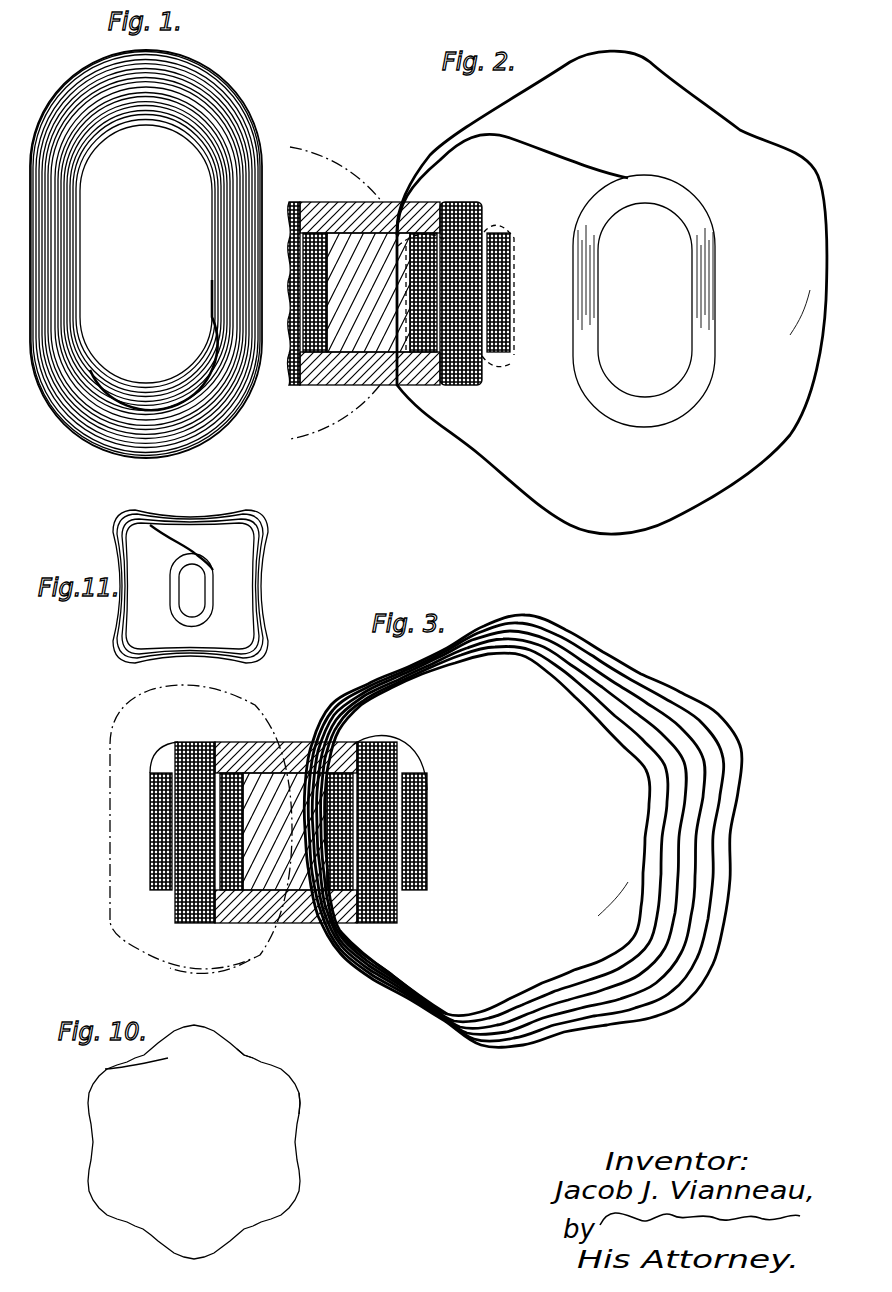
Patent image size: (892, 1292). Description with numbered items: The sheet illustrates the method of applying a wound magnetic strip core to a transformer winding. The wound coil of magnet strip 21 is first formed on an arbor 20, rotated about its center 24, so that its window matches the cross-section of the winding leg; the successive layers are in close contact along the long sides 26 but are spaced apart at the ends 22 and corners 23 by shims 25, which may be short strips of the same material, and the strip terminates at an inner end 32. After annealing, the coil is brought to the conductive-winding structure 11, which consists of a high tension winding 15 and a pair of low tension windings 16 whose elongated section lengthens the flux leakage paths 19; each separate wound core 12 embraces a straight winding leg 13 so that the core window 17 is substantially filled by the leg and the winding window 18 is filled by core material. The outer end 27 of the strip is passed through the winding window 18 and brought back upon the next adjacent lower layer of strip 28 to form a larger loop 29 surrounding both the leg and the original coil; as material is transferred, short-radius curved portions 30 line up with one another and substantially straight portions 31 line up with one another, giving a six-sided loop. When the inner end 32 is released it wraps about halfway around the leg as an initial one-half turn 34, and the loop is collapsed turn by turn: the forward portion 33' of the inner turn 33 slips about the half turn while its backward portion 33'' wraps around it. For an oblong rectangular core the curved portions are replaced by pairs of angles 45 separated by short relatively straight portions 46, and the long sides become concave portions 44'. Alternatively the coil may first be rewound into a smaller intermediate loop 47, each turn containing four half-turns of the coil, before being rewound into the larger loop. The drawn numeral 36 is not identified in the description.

In FIG. 2, the conductive-winding structure 11 is at (385, 385).
In FIG. 3, the conductive-winding structure 11 is at (296, 925).
In FIG. 2, the wound core 12 is at (330, 424).
In FIG. 3, the wound core 12 is at (254, 950).
In FIG. 2, the winding leg 13 is at (490, 362).
In FIG. 3, the winding leg 13 is at (175, 896).
In FIG. 2, the high tension winding 15 is at (478, 204).
In FIG. 3, the high tension winding 15 is at (392, 925).
In FIG. 2, the low tension windings 16 is at (420, 248).
In FIG. 3, the low tension windings 16 is at (346, 920).
In FIG. 2, the core window 17 is at (674, 224).
In FIG. 3, the core window 17 is at (165, 756).
In FIG. 11, the core window 17 is at (180, 590).
In FIG. 2, the winding window 18 is at (376, 232).
In FIG. 3, the winding window 18 is at (288, 744).
In FIG. 2, the flux leakage paths 19 is at (513, 251).
In FIG. 1, the arbor 20 is at (112, 142).
In FIG. 1, the coil of magnet strip 21 is at (31, 347).
In FIG. 2, the coil of magnet strip 21 is at (716, 349).
In FIG. 11, the coil of magnet strip 21 is at (213, 605).
In FIG. 1, the ends 22 is at (166, 55).
In FIG. 1, the corners 23 is at (42, 108).
In FIG. 1, the center 24 is at (146, 254).
In FIG. 1, the shims 25 is at (228, 88).
In FIG. 1, the sides 26 is at (31, 248).
In FIG. 3, the sides 26 is at (110, 832).
In FIG. 1, the end of the strip 27 is at (263, 296).
In FIG. 2, the end of the strip 27 is at (396, 300).
In FIG. 2, the next adjacent lower layer of strip 28 is at (495, 135).
In FIG. 2, the larger loop 29 is at (692, 98).
In FIG. 3, the larger loop 29 is at (578, 632).
In FIG. 3, the curved portions 30 is at (518, 612).
In FIG. 3, the substantially straight portions 31 is at (590, 716).
In FIG. 1, the inner end of the strip 32 is at (212, 280).
In FIG. 3, the inner end of the strip 32 is at (428, 860).
In FIG. 3, the inner turn 33 is at (502, 834).
In FIG. 3, the forward portion of the inner turn 33' is at (487, 834).
In FIG. 3, the backward portion of the inner turn 33'' is at (398, 972).
In FIG. 3, the initial one-half turn 34 is at (392, 746).
In FIG. 3, the winding portion 36 is at (333, 958).
In FIG. 10, the concave portions 44' is at (262, 1102).
In FIG. 10, the angles 45 is at (176, 1026).
In FIG. 10, the short relatively straight portions 46 is at (196, 1026).
In FIG. 11, the intermediate loop 47 is at (181, 521).